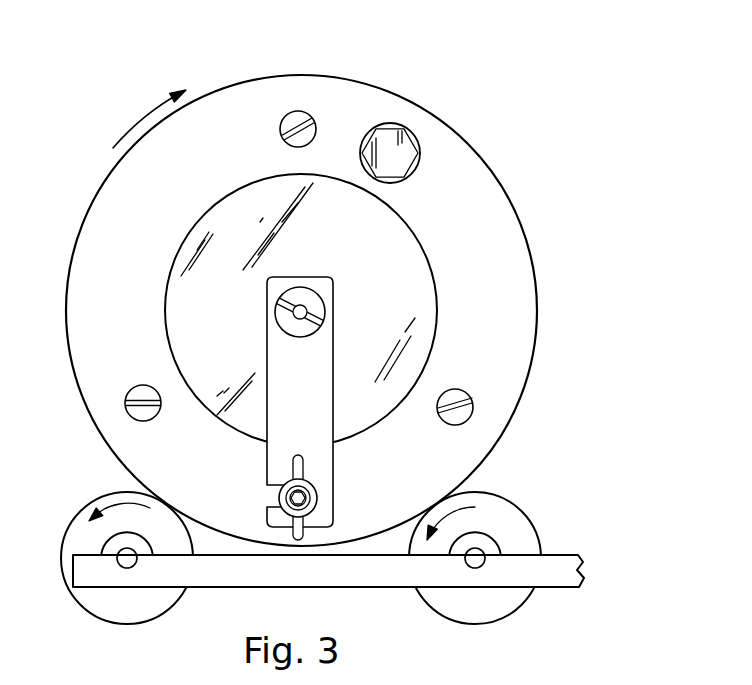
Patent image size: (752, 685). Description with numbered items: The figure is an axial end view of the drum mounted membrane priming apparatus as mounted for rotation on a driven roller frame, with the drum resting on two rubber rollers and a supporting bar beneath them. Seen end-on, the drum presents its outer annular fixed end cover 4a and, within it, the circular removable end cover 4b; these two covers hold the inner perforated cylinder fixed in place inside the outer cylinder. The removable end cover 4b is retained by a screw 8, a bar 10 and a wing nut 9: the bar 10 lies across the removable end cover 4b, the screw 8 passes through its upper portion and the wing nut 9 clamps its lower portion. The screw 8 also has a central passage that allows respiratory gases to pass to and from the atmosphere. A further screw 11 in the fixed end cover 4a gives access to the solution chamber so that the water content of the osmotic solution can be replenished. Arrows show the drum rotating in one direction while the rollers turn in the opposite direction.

The fixed end cover 4a is at (500, 277).
The removable end cover 4b is at (395, 277).
The screw 8 is at (307, 293).
The wing nut 9 is at (302, 473).
The bar 10 is at (278, 357).
The screw 11 is at (396, 151).